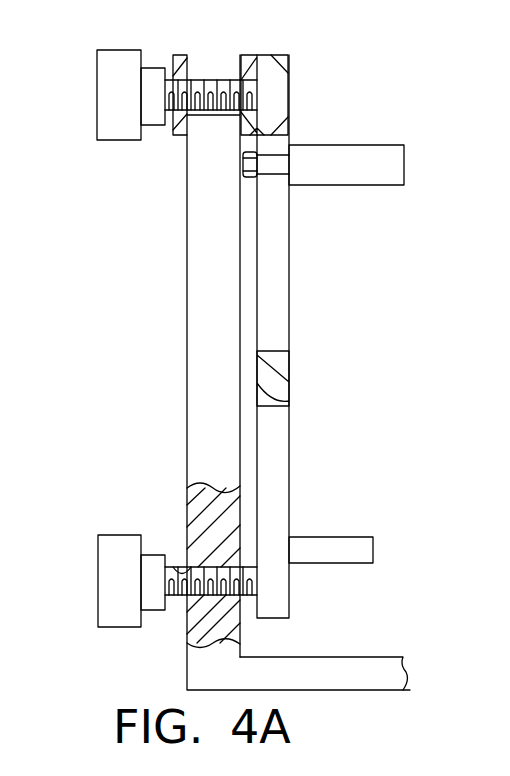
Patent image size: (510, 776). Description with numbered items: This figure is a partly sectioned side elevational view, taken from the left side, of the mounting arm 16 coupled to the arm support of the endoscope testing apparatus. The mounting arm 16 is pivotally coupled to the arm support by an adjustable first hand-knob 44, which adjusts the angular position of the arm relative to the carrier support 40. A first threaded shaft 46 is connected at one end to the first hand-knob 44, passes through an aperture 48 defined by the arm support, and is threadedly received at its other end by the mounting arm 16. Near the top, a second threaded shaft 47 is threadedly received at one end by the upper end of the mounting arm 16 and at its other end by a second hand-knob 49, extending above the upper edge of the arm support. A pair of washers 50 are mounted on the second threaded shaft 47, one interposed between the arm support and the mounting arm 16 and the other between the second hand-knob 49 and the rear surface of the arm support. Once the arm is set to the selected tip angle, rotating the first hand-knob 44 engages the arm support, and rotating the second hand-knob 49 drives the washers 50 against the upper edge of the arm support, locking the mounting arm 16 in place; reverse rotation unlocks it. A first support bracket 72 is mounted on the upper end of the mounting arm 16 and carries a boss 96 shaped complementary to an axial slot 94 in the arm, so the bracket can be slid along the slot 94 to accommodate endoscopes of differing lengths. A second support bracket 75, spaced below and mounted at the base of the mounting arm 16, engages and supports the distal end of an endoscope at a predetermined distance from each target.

The mounting arm 16 is at (313, 427).
The carrier support 40 is at (345, 657).
The first hand-knob 44 is at (98, 558).
The first threaded shaft 46 is at (183, 597).
The second threaded shaft 47 is at (207, 82).
The aperture 48 is at (178, 576).
The second hand-knob 49 is at (97, 101).
The washers 50 is at (181, 55).
The first support bracket 72 is at (365, 145).
The second support bracket 75 is at (306, 537).
The slot 94 is at (272, 352).
The boss 96 is at (266, 175).